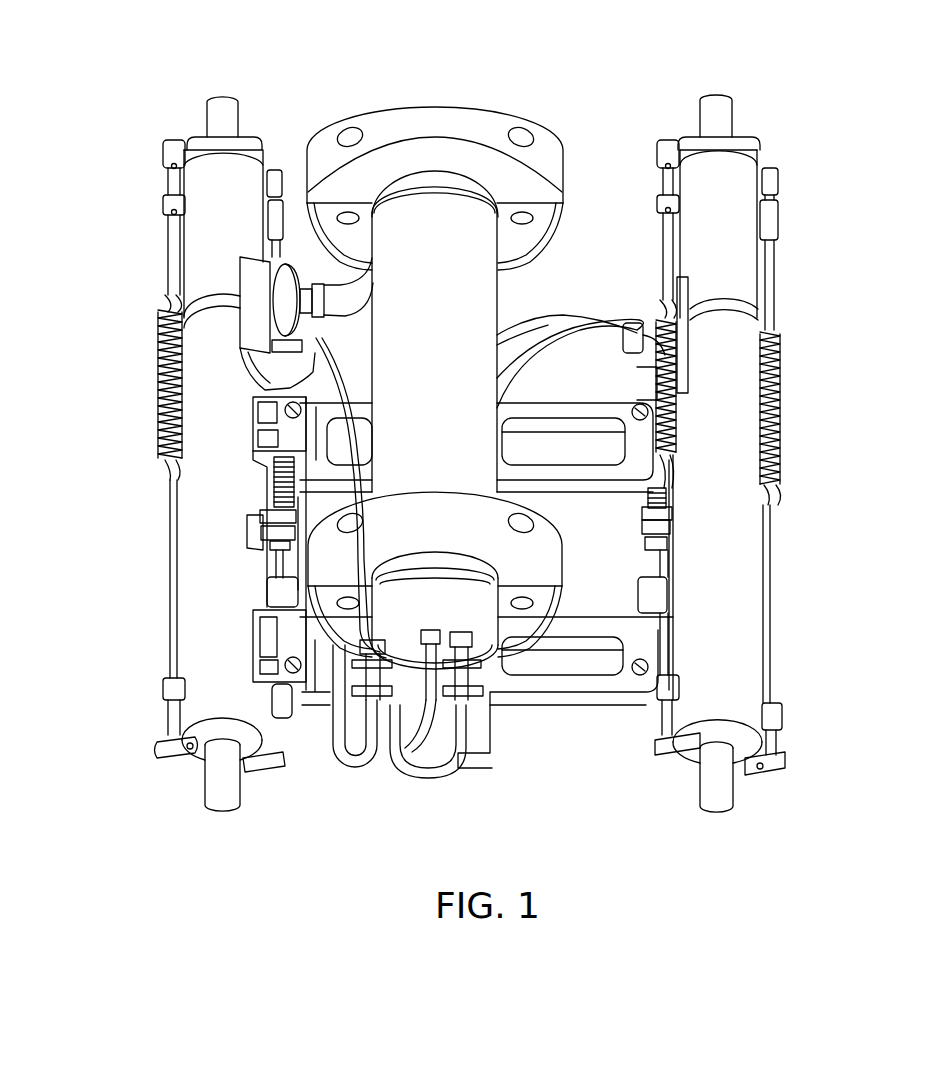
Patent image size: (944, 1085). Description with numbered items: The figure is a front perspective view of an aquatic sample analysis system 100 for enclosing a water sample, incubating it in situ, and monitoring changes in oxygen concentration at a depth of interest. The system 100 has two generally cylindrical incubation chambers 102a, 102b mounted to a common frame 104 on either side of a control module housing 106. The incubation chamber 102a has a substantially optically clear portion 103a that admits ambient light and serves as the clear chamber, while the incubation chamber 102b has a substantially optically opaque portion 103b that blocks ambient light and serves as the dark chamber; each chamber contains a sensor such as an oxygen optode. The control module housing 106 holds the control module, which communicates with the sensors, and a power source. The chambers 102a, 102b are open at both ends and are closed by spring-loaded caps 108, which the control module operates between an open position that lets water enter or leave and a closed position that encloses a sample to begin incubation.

The aquatic sample analysis system 100 is at (333, 53).
The incubation chamber 102a is at (811, 272).
The incubation chamber 102b is at (123, 276).
The substantially optically clear portion 103a is at (745, 549).
The substantially optically opaque portion 103b is at (195, 545).
The common frame 104 is at (557, 700).
The control module housing 106 is at (445, 210).
The spring-loaded caps 108 is at (200, 139).